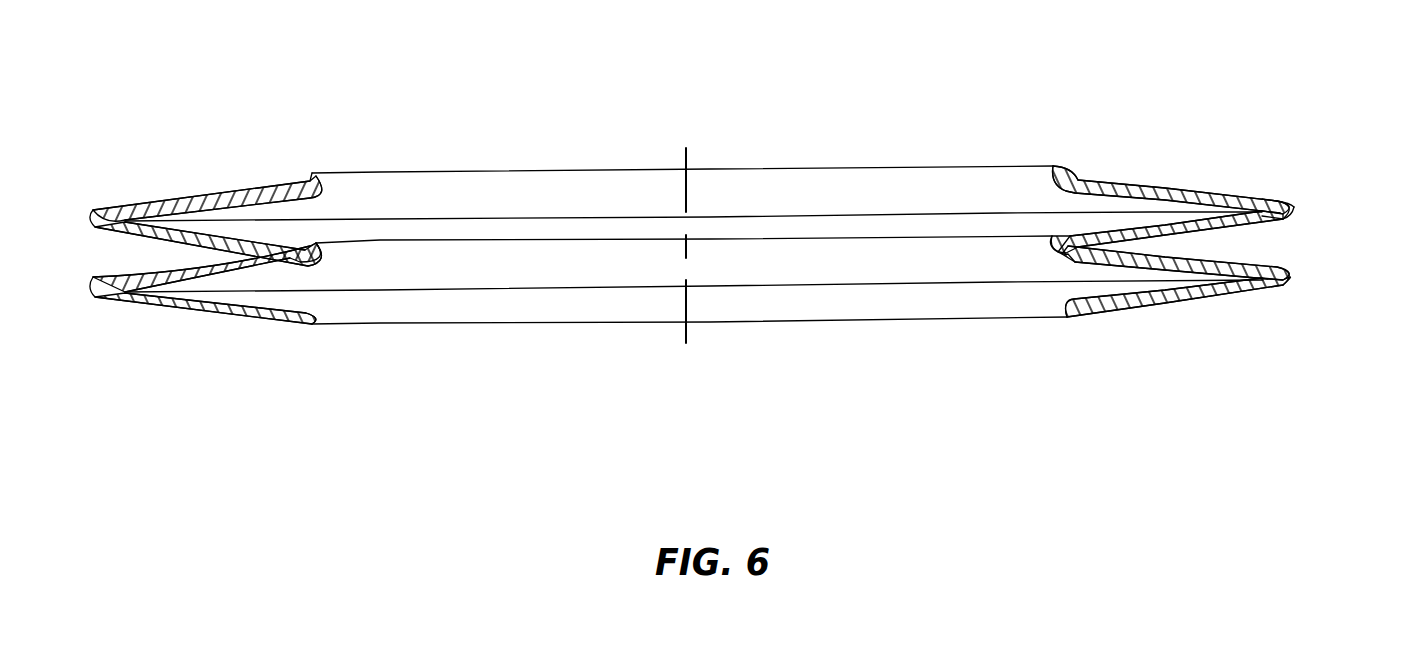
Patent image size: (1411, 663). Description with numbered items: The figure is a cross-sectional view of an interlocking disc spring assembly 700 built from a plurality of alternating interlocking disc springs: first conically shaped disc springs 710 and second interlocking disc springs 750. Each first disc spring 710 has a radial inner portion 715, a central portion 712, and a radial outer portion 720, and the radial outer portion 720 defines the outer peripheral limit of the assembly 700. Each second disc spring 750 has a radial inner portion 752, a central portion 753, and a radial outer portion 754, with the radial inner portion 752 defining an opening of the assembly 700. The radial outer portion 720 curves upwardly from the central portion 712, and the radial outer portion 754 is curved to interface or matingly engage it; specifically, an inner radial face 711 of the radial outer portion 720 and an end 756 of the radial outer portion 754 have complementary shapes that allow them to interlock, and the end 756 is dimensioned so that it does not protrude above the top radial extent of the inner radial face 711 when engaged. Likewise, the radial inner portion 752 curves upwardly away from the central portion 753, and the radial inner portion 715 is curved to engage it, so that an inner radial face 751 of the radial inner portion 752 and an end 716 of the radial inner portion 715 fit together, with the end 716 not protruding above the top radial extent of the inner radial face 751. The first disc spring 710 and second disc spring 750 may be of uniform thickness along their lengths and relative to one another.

The interlocking disc spring assembly 700 is at (967, 408).
The first disc spring 710 is at (1253, 227).
The inner radial face 711 is at (1225, 295).
The central portion 712 is at (1193, 232).
The radial inner portion 715 is at (1065, 236).
The end 716 is at (1056, 245).
The radial outer portion 720 is at (1293, 213).
The second disc spring 750 is at (1183, 187).
The inner radial face 751 is at (1070, 178).
The radial inner portion 752 is at (1070, 172).
The central portion 753 is at (1162, 188).
The radial outer portion 754 is at (1277, 193).
The end 756 is at (1293, 197).